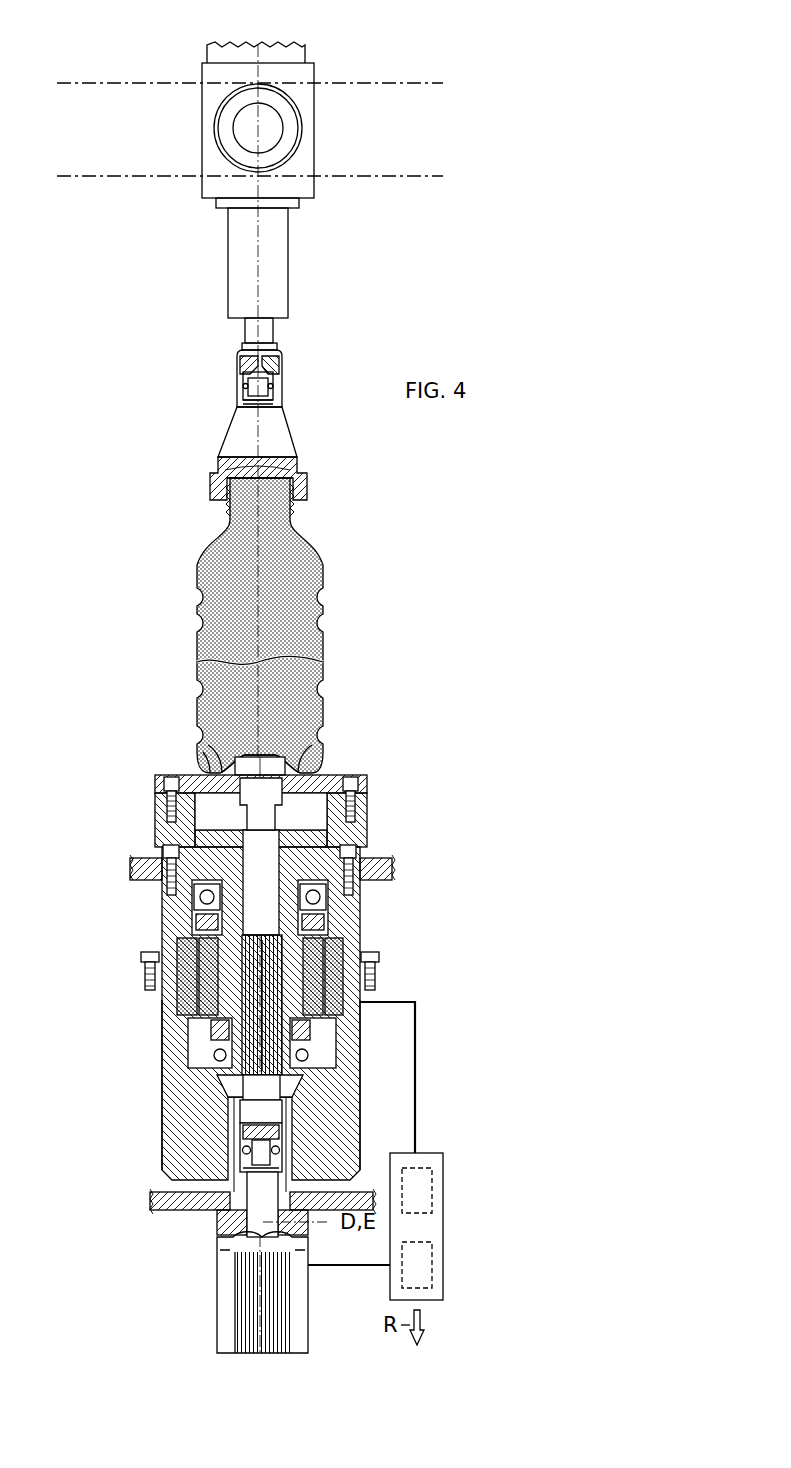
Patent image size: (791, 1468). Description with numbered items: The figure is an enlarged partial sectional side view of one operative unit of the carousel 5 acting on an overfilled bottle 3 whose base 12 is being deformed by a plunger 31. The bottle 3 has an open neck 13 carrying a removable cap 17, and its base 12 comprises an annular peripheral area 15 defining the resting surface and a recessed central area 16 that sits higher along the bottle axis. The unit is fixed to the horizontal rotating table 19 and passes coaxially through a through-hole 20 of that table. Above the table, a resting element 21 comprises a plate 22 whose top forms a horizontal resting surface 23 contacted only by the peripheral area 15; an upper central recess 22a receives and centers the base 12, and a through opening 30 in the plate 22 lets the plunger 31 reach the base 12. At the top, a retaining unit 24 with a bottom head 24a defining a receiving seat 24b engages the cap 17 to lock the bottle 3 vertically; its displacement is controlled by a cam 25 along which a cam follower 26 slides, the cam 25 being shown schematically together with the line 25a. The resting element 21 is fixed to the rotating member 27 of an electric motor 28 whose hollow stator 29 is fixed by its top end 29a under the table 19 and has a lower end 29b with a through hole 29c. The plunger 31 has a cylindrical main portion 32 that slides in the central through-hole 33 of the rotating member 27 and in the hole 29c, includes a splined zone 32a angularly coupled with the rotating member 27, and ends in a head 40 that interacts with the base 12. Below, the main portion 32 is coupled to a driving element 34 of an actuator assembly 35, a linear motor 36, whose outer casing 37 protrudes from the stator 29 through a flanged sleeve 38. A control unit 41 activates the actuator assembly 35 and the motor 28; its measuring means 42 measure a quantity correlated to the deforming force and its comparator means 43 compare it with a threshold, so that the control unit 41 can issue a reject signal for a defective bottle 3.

The bottle 3 is at (192, 557).
The carousel 5 is at (379, 857).
The base 12 is at (335, 762).
The neck 13 is at (292, 512).
The annular peripheral area 15 is at (331, 766).
The recessed central area 16 is at (226, 752).
The cap 17 is at (238, 470).
The rotating table 19 is at (388, 868).
The through-hole 20 is at (193, 873).
The resting element 21 is at (371, 786).
The plate 22 is at (178, 796).
The upper central recess 22a is at (206, 767).
The resting surface 23 is at (182, 769).
The retaining unit 24 is at (277, 79).
The head 24a is at (248, 430).
The receiving seat 24b is at (270, 483).
The cam 25 is at (147, 180).
The upper guide line 25a is at (398, 83).
The cam follower 26 is at (228, 137).
The rotating member 27 is at (233, 1032).
The electric motor 28 is at (161, 940).
The stator 29 is at (185, 1140).
The top end 29a is at (356, 888).
The lower end 29b is at (340, 1160).
The through hole 29c is at (234, 1107).
The through opening 30 is at (273, 788).
The plunger 31 is at (253, 838).
The main portion 32 is at (255, 1095).
The splined zone 32a is at (268, 1035).
The central through-hole 33 is at (275, 1003).
The driving element 34 is at (257, 1153).
The actuator assembly 35 is at (212, 1270).
The linear motor 36 is at (227, 1302).
The outer casing 37 is at (275, 1297).
The flanged sleeve 38 is at (192, 1203).
The head 40 is at (278, 765).
The control unit 41 is at (387, 1246).
The measuring means 42 is at (417, 1277).
The comparator means 43 is at (413, 1185).